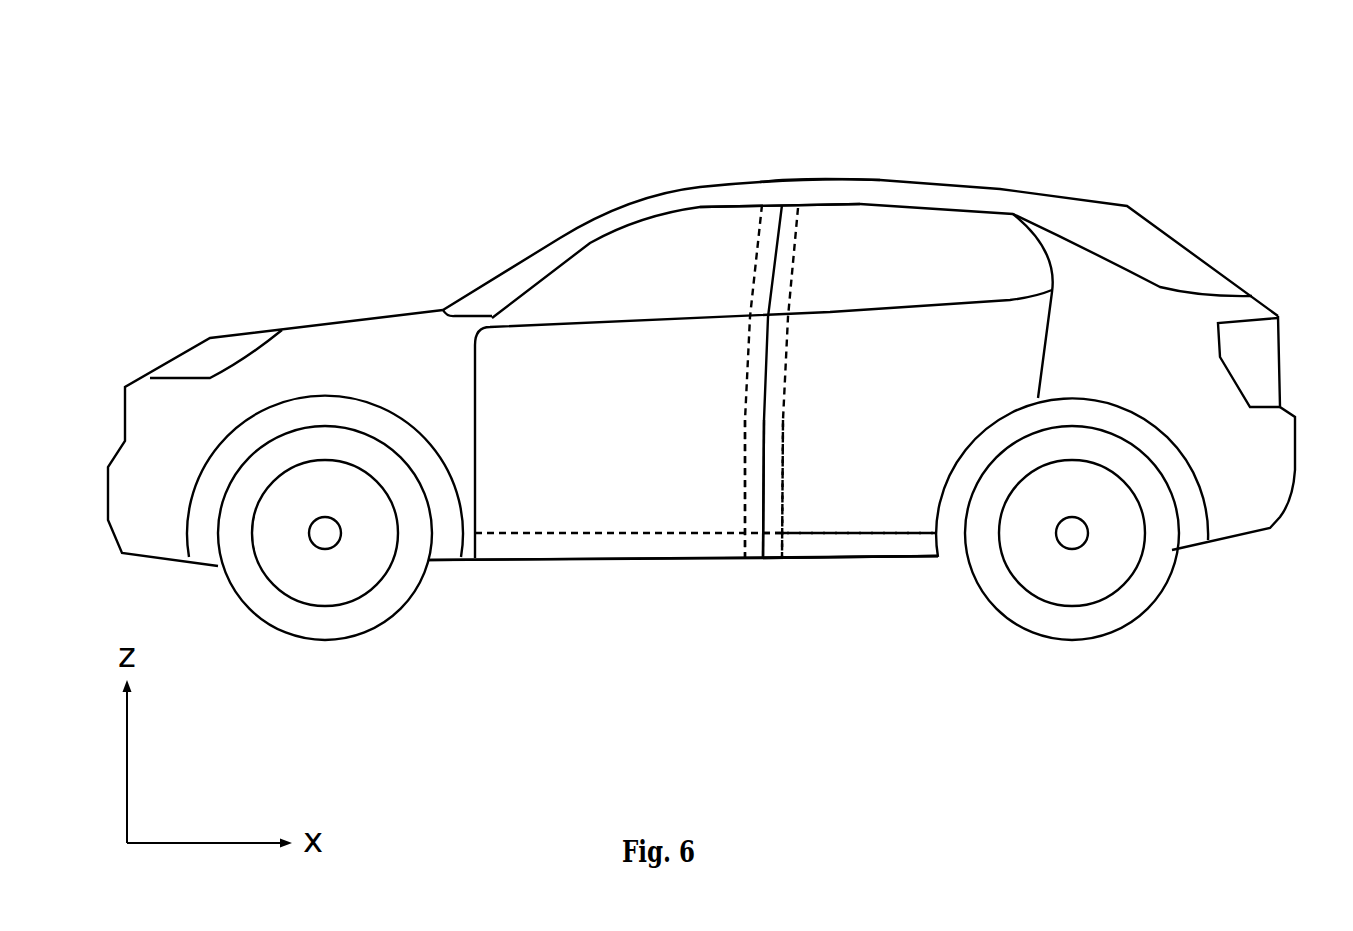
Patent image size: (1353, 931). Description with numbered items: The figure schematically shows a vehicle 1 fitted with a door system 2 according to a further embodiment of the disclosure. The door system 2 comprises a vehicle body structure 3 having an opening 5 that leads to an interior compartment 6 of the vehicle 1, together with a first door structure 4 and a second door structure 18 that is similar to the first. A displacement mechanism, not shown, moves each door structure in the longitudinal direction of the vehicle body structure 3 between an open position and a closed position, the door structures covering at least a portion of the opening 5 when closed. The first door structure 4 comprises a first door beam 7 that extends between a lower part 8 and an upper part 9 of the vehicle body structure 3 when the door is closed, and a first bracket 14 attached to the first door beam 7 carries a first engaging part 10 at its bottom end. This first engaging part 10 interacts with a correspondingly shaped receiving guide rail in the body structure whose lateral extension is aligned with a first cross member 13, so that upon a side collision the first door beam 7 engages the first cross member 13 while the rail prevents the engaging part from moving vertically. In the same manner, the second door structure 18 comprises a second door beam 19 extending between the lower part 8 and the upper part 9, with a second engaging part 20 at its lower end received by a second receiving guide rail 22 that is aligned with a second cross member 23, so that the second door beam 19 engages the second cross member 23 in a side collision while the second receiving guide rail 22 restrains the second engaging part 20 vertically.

The vehicle 1 is at (440, 138).
The door system 2 is at (280, 158).
The vehicle body structure 3 is at (1053, 192).
The first door structure 4 is at (607, 287).
The opening 5 is at (827, 223).
The interior compartment 6 is at (820, 180).
The first door beam 7 is at (755, 250).
The lower part 8 is at (947, 634).
The upper part 9 is at (770, 197).
The first engaging part 10 is at (742, 543).
The first cross member 13 is at (747, 550).
The first bracket 14 is at (595, 559).
The second door structure 18 is at (792, 272).
The second door beam 19 is at (970, 248).
The second engaging part 20 is at (929, 594).
The second receiving guide rail 22 is at (850, 557).
The second cross member 23 is at (767, 560).